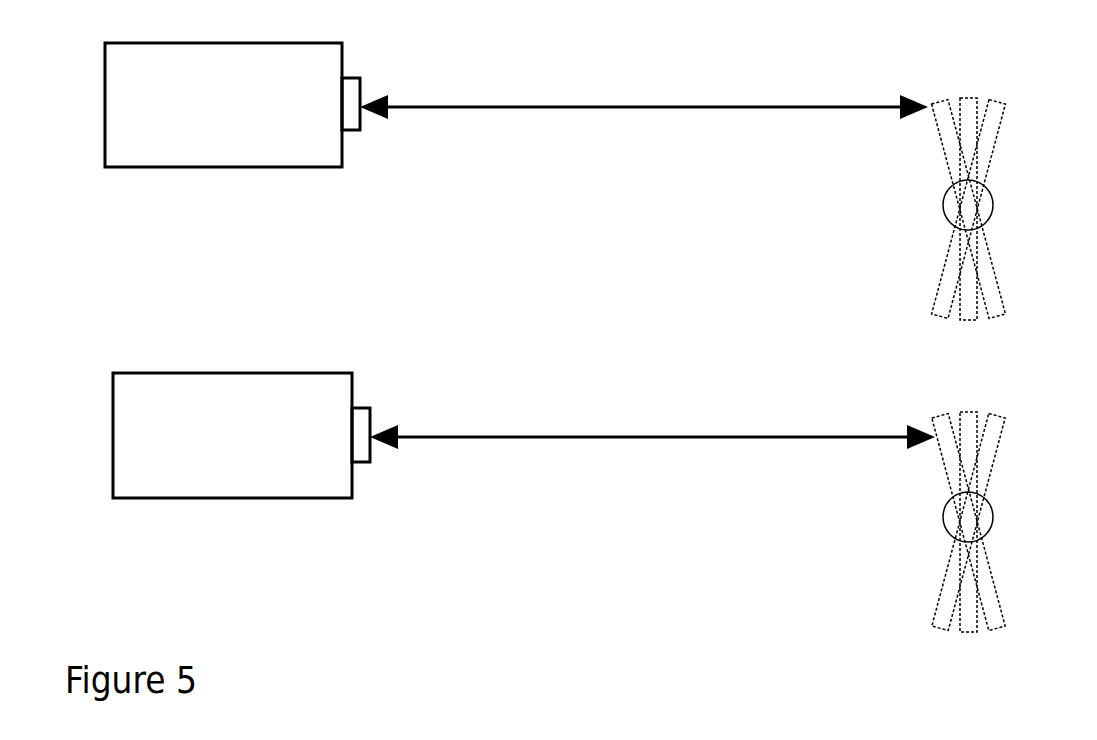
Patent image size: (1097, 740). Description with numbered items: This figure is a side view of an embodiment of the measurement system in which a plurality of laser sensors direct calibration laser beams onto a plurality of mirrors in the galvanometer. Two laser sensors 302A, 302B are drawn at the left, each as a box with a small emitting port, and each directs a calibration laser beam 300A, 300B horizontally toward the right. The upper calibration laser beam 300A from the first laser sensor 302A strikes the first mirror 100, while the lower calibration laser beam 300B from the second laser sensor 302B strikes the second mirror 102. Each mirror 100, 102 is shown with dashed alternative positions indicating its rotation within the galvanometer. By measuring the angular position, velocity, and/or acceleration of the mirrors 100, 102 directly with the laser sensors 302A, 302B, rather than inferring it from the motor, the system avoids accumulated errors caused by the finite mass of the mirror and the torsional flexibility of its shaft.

The mirror 100 is at (972, 98).
The mirror 102 is at (978, 412).
The calibration laser beam 300A is at (643, 110).
The calibration laser beam 300B is at (652, 440).
The laser sensor 302A is at (254, 117).
The laser sensor 302B is at (264, 447).